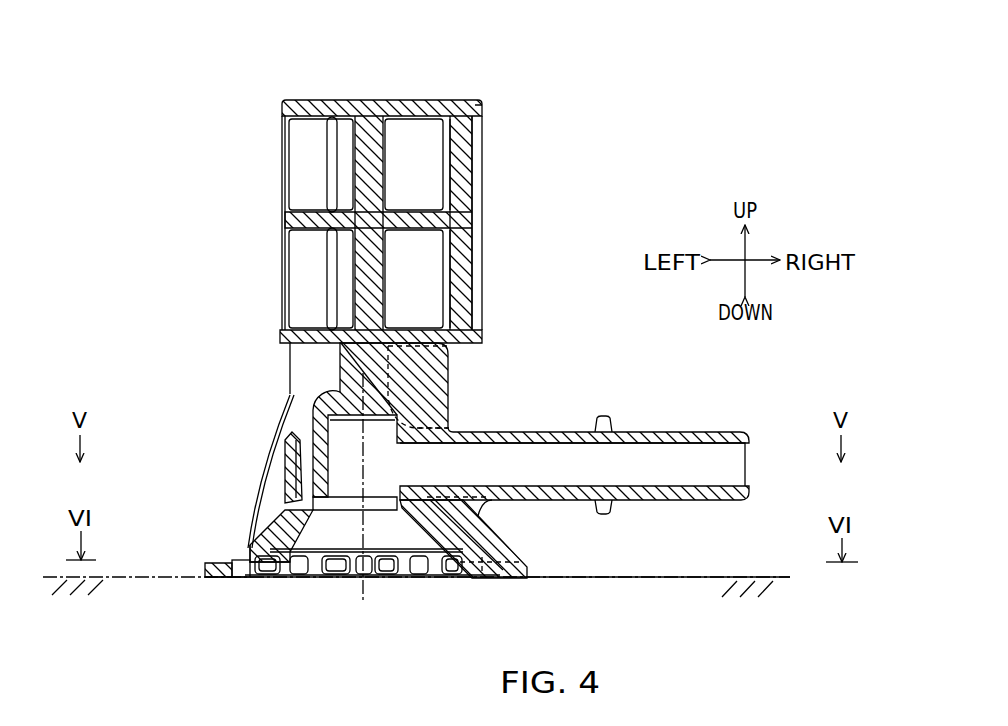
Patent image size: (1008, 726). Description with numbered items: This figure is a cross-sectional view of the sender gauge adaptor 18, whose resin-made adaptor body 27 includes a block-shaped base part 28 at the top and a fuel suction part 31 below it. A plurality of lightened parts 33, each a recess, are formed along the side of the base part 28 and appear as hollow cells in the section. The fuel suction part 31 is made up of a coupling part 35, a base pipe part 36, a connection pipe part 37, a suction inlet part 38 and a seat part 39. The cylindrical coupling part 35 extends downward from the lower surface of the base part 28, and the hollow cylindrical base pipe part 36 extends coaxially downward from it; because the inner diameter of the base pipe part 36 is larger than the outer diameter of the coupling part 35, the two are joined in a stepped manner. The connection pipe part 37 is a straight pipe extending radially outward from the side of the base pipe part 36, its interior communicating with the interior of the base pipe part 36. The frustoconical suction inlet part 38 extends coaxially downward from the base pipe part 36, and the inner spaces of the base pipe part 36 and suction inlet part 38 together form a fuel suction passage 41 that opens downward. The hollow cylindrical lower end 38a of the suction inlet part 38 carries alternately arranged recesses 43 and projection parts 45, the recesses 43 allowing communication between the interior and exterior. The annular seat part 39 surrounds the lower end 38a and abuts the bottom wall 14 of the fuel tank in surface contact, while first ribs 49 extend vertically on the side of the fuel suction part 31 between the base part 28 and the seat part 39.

The base part 28 is at (372, 97).
The lightened parts 33 is at (301, 164).
The sender gauge adaptor 18 is at (567, 209).
The adaptor body 27 is at (494, 306).
The coupling part 35 is at (345, 358).
The first ribs 49 is at (307, 372).
The fuel suction part 31 is at (310, 405).
The base pipe part 36 is at (319, 433).
The fuel suction passage 41 is at (343, 467).
The connection pipe part 37 is at (560, 433).
The suction inlet part 38 is at (285, 522).
The lower end 38a is at (258, 552).
The seat part 39 is at (212, 572).
The recesses 43 is at (256, 578).
The projection parts 45 is at (472, 567).
The bottom wall 14 is at (742, 577).